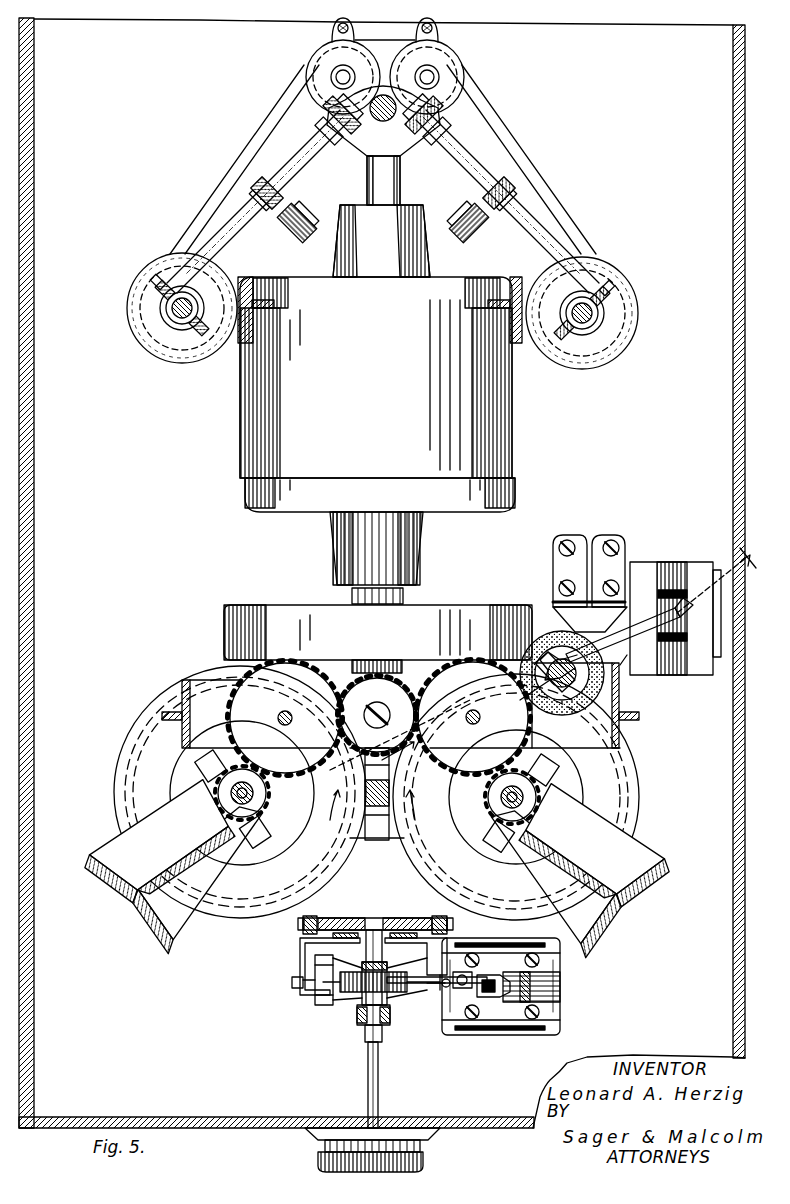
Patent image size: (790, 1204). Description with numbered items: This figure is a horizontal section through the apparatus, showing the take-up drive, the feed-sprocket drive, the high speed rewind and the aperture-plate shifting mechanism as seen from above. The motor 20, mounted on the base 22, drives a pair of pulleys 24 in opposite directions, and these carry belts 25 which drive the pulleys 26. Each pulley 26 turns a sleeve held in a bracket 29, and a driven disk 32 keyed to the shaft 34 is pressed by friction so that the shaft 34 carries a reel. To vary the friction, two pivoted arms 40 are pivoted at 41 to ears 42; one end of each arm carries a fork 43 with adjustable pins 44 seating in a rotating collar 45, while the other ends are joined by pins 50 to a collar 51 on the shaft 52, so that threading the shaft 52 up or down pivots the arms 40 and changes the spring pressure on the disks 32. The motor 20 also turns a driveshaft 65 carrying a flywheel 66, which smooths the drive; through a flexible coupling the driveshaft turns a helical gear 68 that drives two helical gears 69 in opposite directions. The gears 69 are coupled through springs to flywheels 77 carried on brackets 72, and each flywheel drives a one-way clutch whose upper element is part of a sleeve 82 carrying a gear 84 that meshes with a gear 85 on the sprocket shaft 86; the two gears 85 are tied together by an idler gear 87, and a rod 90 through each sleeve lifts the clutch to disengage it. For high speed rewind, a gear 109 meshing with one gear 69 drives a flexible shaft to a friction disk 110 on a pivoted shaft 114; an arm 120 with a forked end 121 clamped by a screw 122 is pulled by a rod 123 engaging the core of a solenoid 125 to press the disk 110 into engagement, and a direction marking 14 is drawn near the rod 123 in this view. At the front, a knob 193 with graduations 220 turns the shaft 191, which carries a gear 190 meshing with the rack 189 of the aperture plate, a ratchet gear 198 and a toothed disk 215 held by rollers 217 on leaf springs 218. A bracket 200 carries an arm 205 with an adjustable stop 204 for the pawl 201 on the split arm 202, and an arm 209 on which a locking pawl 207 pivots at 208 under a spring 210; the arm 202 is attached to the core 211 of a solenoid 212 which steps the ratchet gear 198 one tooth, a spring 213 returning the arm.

The base 22 is at (382, 573).
The pulleys 24 is at (330, 58).
The collar 51 is at (388, 80).
The pins 50 is at (330, 114).
The shaft 52 is at (323, 132).
The belts 25 is at (268, 122).
The pivoted arms 40 is at (258, 228).
The pivot 41 is at (268, 180).
The ears 42 is at (295, 242).
The pulleys 26 is at (140, 300).
The shaft 34 is at (168, 322).
The rotating collar 45 is at (172, 312).
The fork 43 is at (178, 280).
The adjustable pins 44 is at (155, 282).
The driven disk 32 is at (190, 352).
The bracket 29 is at (255, 334).
The motor 20 is at (377, 358).
The driveshaft 65 is at (372, 586).
The flywheel 66 is at (305, 590).
The idler gear 87 is at (362, 665).
The shaft 86 is at (379, 718).
The flywheels 77 is at (116, 790).
The helical gears 69 is at (600, 770).
The brackets 72 is at (172, 932).
The rod 90 is at (246, 778).
The gear 84 is at (258, 800).
The sleeve 82 is at (252, 800).
The gear 85 is at (478, 768).
The screw 122 is at (440, 725).
The direction arrow 14 is at (578, 658).
The helical gear 68 is at (376, 820).
The friction disk 110 is at (585, 705).
The shaft 114 is at (562, 688).
The forked end 121 is at (545, 655).
The arm 120 is at (640, 600).
The solenoid 125 is at (700, 662).
The gear 109 is at (625, 662).
The rod 123 is at (690, 600).
The disk 215 is at (393, 915).
The rollers 217 is at (314, 912).
The leaf springs 218 is at (300, 930).
The shaft 191 is at (379, 1075).
The bracket 200 is at (312, 950).
The arm 205 is at (292, 978).
The adjustable stop 204 is at (315, 985).
The pawl 201 is at (335, 995).
The split arm 202 is at (345, 1000).
The ratchet gear 198 is at (425, 992).
The locking pawl 207 is at (455, 990).
The pivot 208 is at (450, 990).
The solenoid 212 is at (560, 990).
The spring 213 is at (502, 974).
The core 211 is at (525, 1002).
The arm 209 is at (455, 970).
The spring 210 is at (465, 975).
The rack 189 is at (360, 1026).
The gear 190 is at (368, 1045).
The graduations 220 is at (440, 1135).
The knob 193 is at (318, 1160).